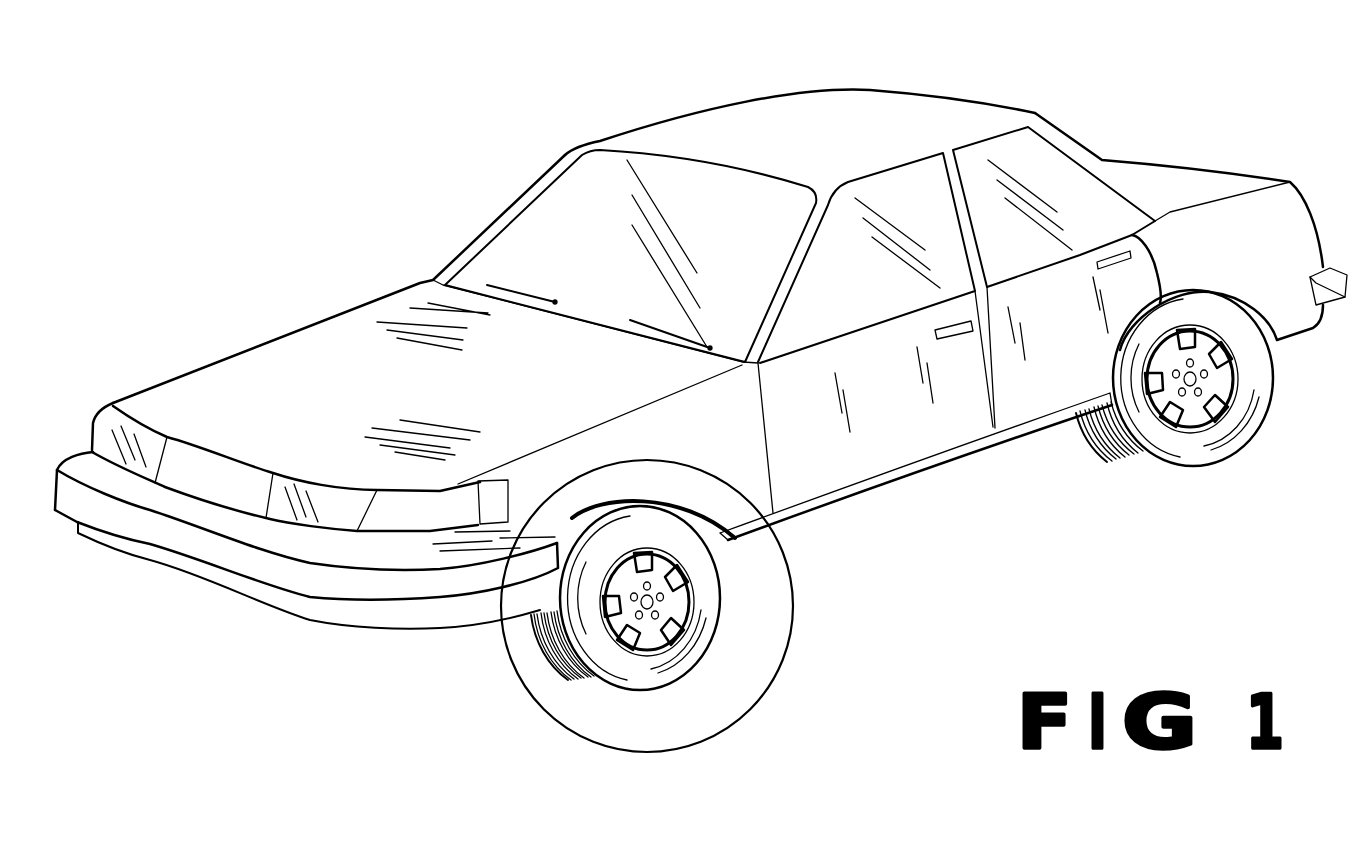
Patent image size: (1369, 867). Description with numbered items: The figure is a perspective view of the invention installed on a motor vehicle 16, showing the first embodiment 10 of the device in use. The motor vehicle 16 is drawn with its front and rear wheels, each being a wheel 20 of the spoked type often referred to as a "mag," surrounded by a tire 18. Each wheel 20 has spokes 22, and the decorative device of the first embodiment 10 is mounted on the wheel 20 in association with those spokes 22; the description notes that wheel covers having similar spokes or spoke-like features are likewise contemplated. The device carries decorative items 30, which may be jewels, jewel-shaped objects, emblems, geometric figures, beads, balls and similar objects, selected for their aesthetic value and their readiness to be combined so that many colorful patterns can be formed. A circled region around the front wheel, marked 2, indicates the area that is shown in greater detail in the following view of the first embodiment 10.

The detail region shown in FIG. 2 is at (588, 462).
The first embodiment 10 is at (477, 711).
The motor vehicle 16 is at (882, 122).
The tire 18 is at (1272, 358).
The wheel 20 is at (645, 622).
The spokes 22 is at (660, 638).
The decorative items 30 is at (690, 600).